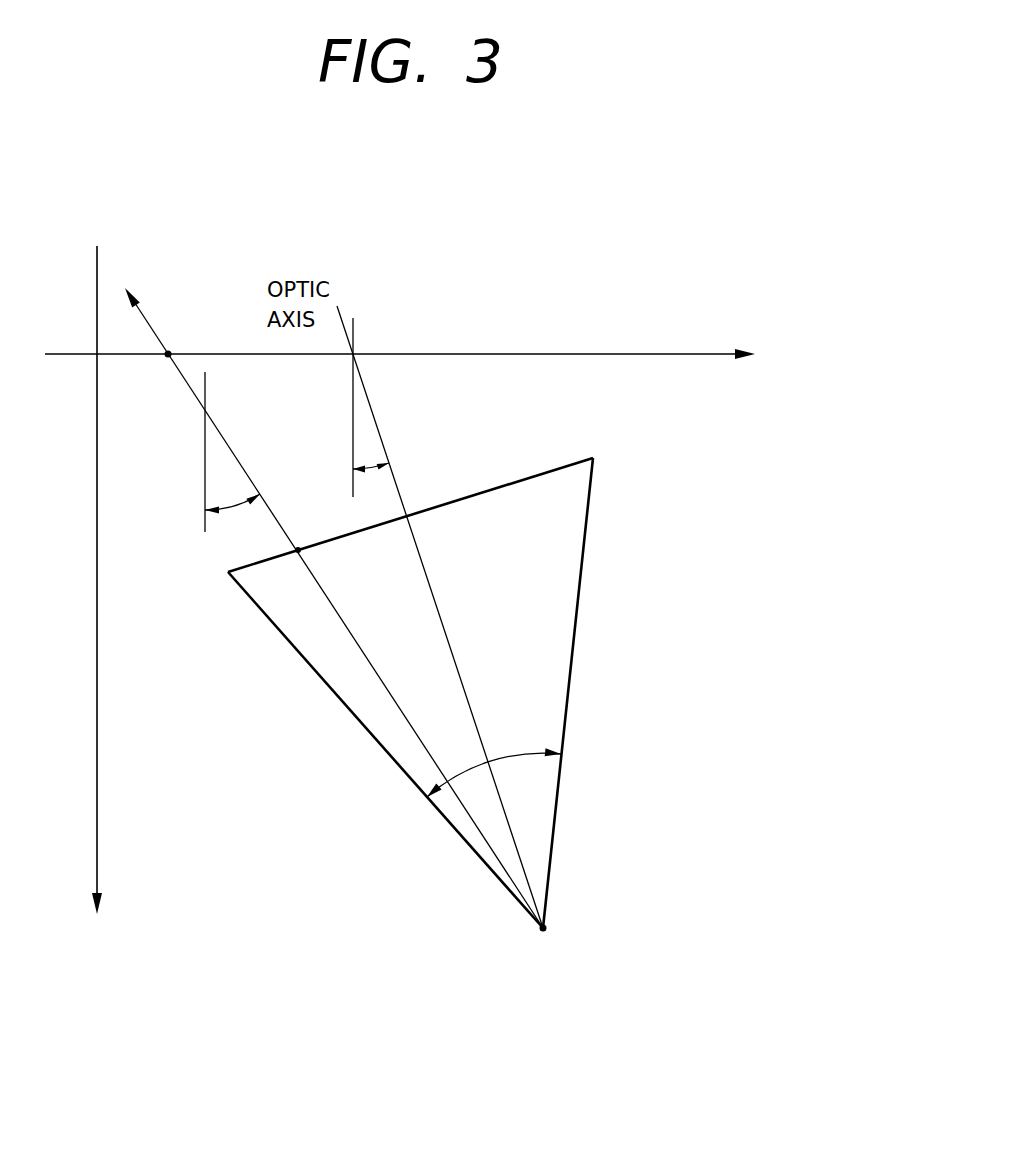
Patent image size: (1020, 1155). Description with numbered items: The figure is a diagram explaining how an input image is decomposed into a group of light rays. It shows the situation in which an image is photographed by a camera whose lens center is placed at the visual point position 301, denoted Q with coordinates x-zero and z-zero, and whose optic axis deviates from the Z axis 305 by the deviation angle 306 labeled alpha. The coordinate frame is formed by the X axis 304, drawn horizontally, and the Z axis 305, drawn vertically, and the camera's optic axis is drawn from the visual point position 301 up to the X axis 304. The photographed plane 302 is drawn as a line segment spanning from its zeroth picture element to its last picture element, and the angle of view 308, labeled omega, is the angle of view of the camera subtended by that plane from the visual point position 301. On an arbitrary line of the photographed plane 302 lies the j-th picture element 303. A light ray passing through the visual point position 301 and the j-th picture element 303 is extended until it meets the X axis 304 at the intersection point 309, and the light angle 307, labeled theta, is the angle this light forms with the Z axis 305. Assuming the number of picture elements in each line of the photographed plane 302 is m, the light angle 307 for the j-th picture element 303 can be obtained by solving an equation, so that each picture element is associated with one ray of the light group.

The visual point position 301 is at (548, 926).
The photographed plane 302 is at (503, 482).
The j-th picture element 303 is at (302, 552).
The X axis 304 is at (497, 354).
The Z axis 305 is at (97, 565).
The angle α 306 is at (375, 466).
The angle θ 307 is at (245, 503).
The angle of view 308 is at (540, 750).
The intersection point 309 is at (168, 352).